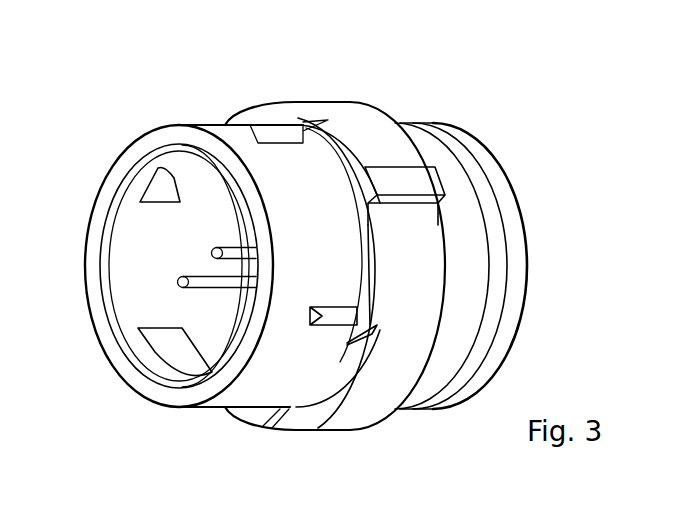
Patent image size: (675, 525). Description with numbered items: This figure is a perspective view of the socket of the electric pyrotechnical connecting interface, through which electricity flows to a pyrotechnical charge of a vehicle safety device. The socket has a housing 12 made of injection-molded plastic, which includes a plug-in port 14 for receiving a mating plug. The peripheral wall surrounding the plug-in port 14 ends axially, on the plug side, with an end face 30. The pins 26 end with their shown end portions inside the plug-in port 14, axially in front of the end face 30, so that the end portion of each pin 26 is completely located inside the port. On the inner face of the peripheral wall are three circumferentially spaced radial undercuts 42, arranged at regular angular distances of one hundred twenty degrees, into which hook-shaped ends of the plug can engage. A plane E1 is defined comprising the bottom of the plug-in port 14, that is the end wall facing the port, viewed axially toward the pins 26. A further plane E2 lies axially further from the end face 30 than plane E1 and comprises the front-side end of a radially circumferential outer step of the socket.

The housing 12 is at (373, 99).
The plug-in port 14 is at (137, 223).
The pins 26 is at (212, 253).
The end face 30 is at (163, 392).
The radial undercuts 42 is at (163, 177).
The plane E1 is at (243, 223).
The plane E2 is at (451, 275).